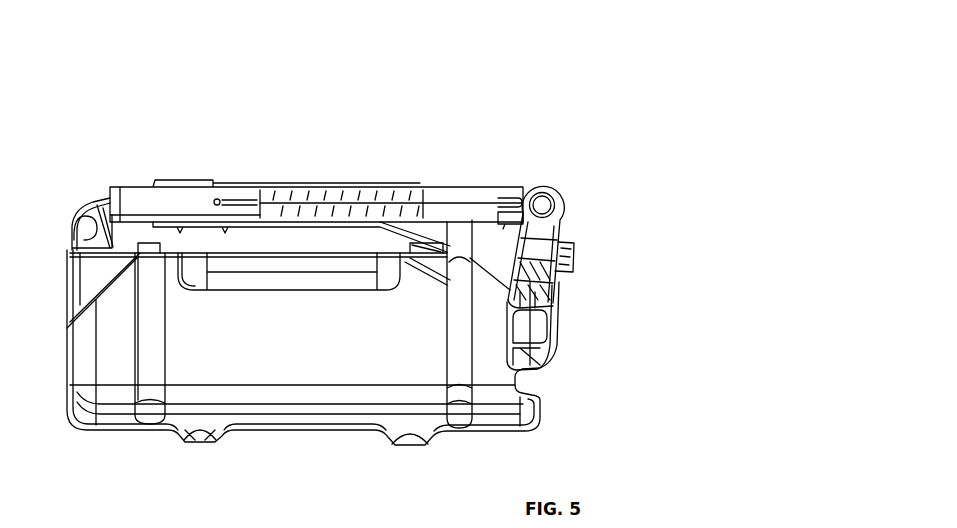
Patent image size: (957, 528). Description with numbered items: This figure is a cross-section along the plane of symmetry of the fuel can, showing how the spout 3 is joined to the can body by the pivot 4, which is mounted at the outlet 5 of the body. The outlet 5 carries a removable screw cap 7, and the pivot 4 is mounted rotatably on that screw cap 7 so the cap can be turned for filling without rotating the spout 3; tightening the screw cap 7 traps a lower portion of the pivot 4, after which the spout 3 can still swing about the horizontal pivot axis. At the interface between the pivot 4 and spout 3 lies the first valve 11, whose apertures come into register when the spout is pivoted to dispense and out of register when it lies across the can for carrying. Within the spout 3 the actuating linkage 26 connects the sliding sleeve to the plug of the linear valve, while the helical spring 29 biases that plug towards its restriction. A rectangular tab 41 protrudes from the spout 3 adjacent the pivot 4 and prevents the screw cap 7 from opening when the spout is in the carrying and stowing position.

The spout 3 is at (391, 188).
The pivot 4 is at (574, 206).
The outlet 5 is at (563, 288).
The screw cap 7 is at (580, 250).
The first valve 11 is at (551, 192).
The actuating linkage 26 is at (232, 198).
The helical spring 29 is at (313, 191).
The rectangular tab 41 is at (503, 212).